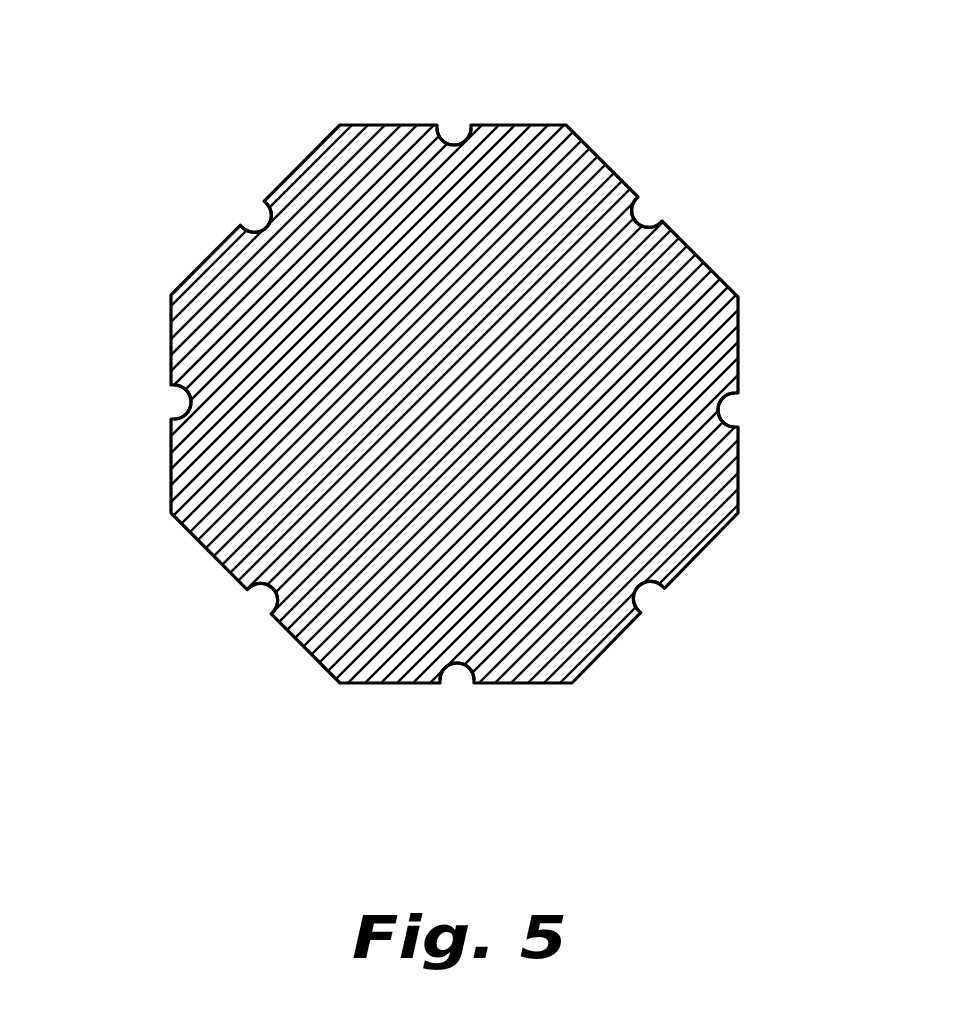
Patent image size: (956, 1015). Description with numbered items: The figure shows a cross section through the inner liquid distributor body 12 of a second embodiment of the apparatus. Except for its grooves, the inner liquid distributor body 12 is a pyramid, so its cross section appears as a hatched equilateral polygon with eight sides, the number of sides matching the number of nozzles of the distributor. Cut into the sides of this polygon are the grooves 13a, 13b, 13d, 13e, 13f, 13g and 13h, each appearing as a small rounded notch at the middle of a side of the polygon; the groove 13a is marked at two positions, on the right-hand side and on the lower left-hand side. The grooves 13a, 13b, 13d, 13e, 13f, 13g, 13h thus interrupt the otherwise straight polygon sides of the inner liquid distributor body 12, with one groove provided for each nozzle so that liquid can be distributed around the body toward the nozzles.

The inner liquid distributor body 12 is at (367, 122).
The groove 13a is at (727, 410).
The groove 13b is at (184, 402).
The groove 13d is at (456, 672).
The groove 13e is at (652, 602).
The groove 13f is at (652, 224).
The groove 13g is at (452, 142).
The groove 13h is at (262, 224).